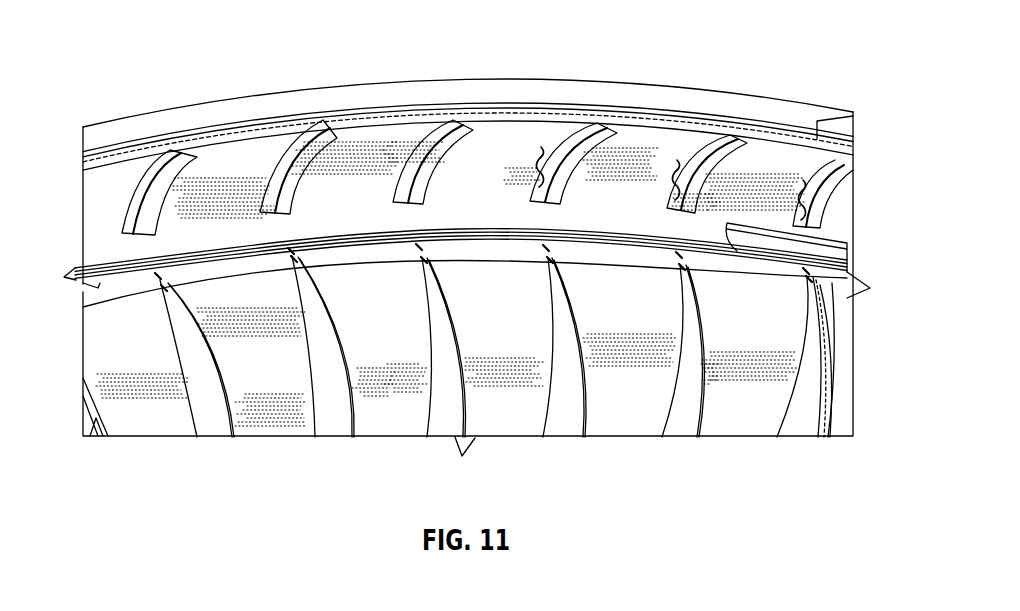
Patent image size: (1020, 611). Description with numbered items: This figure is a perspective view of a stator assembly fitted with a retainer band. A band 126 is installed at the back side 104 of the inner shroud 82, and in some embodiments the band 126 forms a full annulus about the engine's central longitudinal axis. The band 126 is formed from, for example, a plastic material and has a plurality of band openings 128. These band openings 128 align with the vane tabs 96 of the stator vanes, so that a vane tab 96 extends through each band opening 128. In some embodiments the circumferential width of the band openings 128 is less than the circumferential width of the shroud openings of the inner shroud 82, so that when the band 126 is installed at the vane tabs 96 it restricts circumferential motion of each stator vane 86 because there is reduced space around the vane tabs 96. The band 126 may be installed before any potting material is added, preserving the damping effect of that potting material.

The inner shroud 82 is at (157, 277).
The stator vane 86 is at (582, 437).
The vane tabs 96 is at (433, 130).
The back side 104 is at (283, 119).
The band 126 is at (218, 165).
The band openings 128 is at (290, 182).